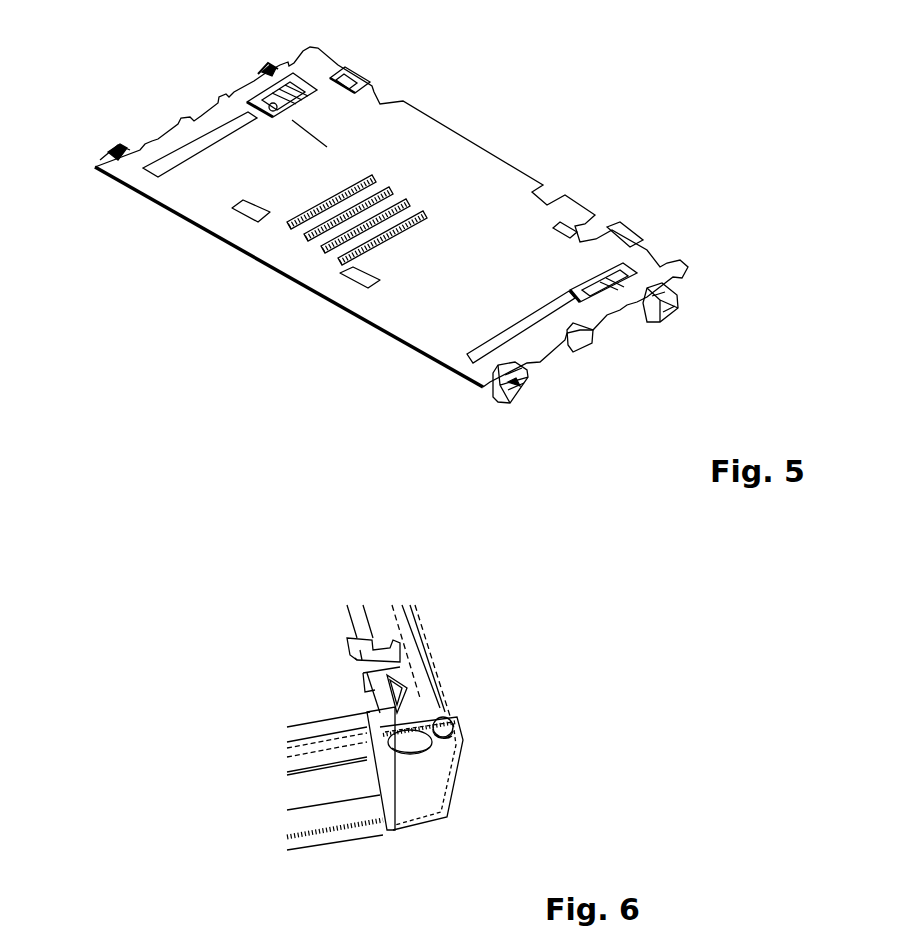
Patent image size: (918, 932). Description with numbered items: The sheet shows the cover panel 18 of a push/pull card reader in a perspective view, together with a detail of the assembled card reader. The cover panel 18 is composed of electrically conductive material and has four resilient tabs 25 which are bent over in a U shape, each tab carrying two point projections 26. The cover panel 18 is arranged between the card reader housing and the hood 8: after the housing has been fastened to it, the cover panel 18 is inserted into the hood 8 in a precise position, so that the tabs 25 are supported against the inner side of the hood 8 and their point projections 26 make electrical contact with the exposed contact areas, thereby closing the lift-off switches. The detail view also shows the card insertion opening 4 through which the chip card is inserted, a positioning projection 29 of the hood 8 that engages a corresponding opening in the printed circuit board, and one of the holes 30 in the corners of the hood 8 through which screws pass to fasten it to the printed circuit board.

In FIG. 5, the cover panel 18 is at (457, 160).
In FIG. 6, the cover panel 18 is at (327, 686).
In FIG. 5, the resilient tabs 25 is at (270, 65).
In FIG. 6, the resilient tabs 25 is at (387, 658).
In FIG. 5, the point projections 26 is at (520, 383).
In FIG. 6, the point projections 26 is at (403, 687).
In FIG. 6, the hood 8 is at (437, 697).
In FIG. 6, the positioning projections 29 is at (453, 725).
In FIG. 6, the holes 30 is at (420, 753).
In FIG. 6, the card insertion opening 4 is at (317, 750).